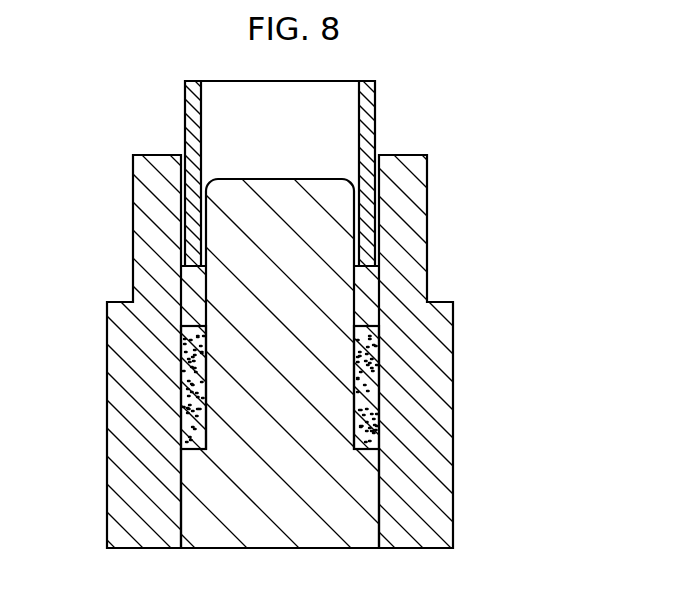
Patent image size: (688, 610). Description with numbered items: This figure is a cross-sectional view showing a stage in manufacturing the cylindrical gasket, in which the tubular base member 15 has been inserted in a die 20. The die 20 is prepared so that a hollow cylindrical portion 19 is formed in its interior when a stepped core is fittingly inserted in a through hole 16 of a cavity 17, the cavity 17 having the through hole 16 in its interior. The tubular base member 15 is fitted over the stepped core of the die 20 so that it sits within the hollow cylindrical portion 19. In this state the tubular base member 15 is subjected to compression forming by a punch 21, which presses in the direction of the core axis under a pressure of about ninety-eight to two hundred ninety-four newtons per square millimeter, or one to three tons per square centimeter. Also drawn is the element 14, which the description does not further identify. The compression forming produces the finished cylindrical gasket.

The main body 14 is at (288, 530).
The tubular base member 15 is at (183, 412).
The through hole 16 is at (182, 390).
The cavity 17 is at (403, 243).
The hollow cylindrical portion 19 is at (377, 377).
The die 20 is at (344, 330).
The punch 21 is at (190, 142).